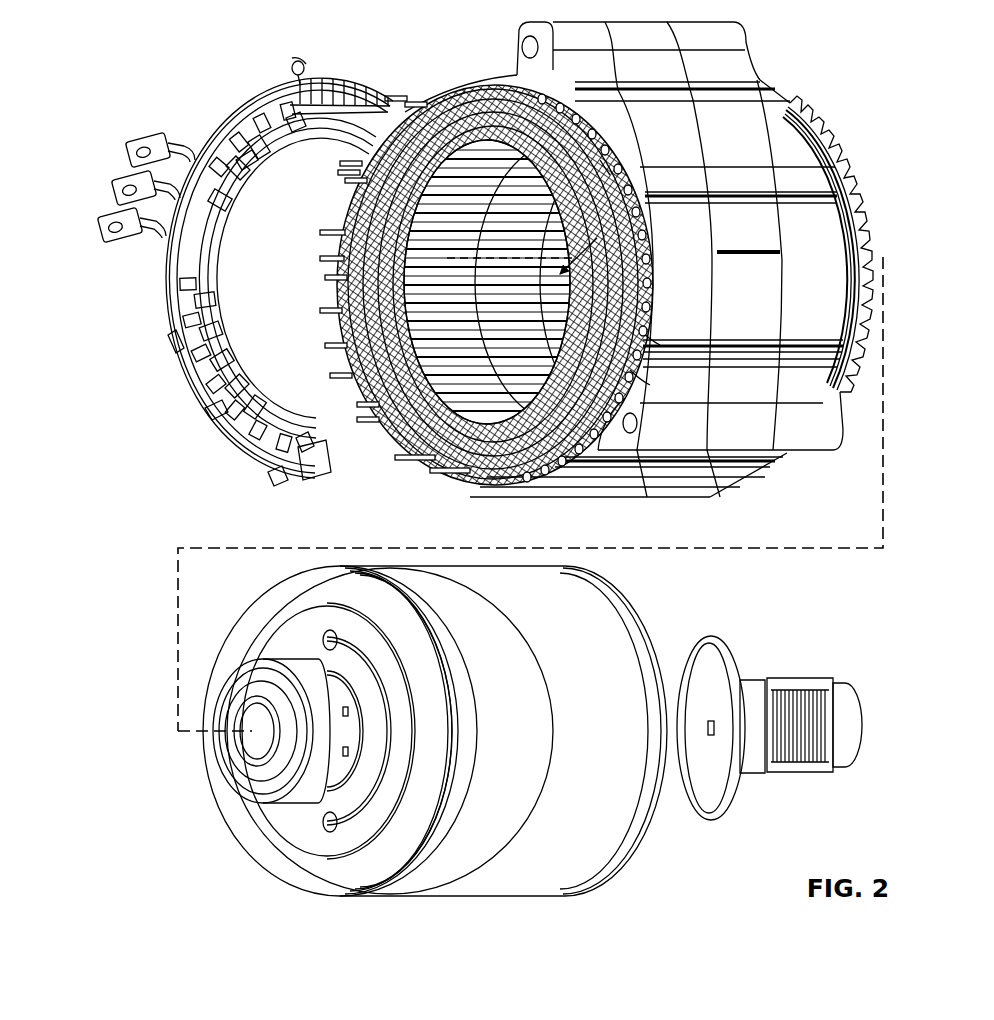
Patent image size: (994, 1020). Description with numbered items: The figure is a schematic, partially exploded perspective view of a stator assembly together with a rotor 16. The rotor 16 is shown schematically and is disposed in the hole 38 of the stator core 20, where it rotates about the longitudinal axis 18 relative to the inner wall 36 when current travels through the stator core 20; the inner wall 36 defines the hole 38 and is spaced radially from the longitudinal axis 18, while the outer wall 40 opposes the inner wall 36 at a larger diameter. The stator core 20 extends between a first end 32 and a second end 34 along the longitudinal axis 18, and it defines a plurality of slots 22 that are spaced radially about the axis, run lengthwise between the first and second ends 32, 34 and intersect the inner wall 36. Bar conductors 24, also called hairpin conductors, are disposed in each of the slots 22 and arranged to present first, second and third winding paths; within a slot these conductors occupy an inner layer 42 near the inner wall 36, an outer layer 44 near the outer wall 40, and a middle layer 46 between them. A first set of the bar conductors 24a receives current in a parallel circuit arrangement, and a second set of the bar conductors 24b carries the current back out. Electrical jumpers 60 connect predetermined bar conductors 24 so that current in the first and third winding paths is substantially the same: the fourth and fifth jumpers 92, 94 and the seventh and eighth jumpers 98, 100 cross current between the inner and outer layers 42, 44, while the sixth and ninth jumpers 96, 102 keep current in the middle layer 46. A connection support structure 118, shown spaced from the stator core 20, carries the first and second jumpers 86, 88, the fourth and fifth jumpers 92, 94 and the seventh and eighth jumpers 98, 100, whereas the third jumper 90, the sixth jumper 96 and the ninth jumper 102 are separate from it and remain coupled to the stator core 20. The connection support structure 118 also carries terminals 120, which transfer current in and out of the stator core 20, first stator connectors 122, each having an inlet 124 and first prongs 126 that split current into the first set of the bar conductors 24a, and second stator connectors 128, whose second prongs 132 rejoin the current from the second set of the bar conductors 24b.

The rotor 16 is at (613, 578).
The longitudinal axis 18 is at (840, 551).
The stator core 20 is at (743, 65).
The slots 22 is at (630, 360).
The bar conductors 24 is at (323, 308).
The first set of the bar conductors 24a is at (425, 103).
The second set of the bar conductors 24b is at (346, 181).
The first end 32 is at (517, 33).
The second end 34 is at (783, 97).
The inner wall 36 is at (623, 328).
The hole 38 is at (613, 222).
The outer wall 40 is at (838, 233).
The inner layer 42 is at (603, 163).
The outer layer 44 is at (486, 86).
The middle layer 46 is at (534, 162).
The electrical jumpers 60 is at (170, 310).
The first one of the electrical jumpers 86 is at (257, 93).
The second one of the electrical jumpers 88 is at (228, 128).
The third one of the electrical jumpers 90 is at (353, 88).
The fourth one of the electrical jumpers 92 is at (213, 313).
The fifth one of the electrical jumpers 94 is at (188, 284).
The sixth one of the electrical jumpers 96 is at (335, 277).
The seventh one of the electrical jumpers 98 is at (222, 422).
The eighth one of the electrical jumpers 100 is at (217, 403).
The ninth one of the electrical jumpers 102 is at (392, 425).
The connection support structure 118 is at (315, 477).
The terminals 120 is at (130, 143).
The first stator connectors 122 is at (307, 67).
The inlet 124 is at (292, 62).
The first prongs 126 is at (293, 127).
The second stator connectors 128 is at (245, 161).
The second prongs 132 is at (307, 443).